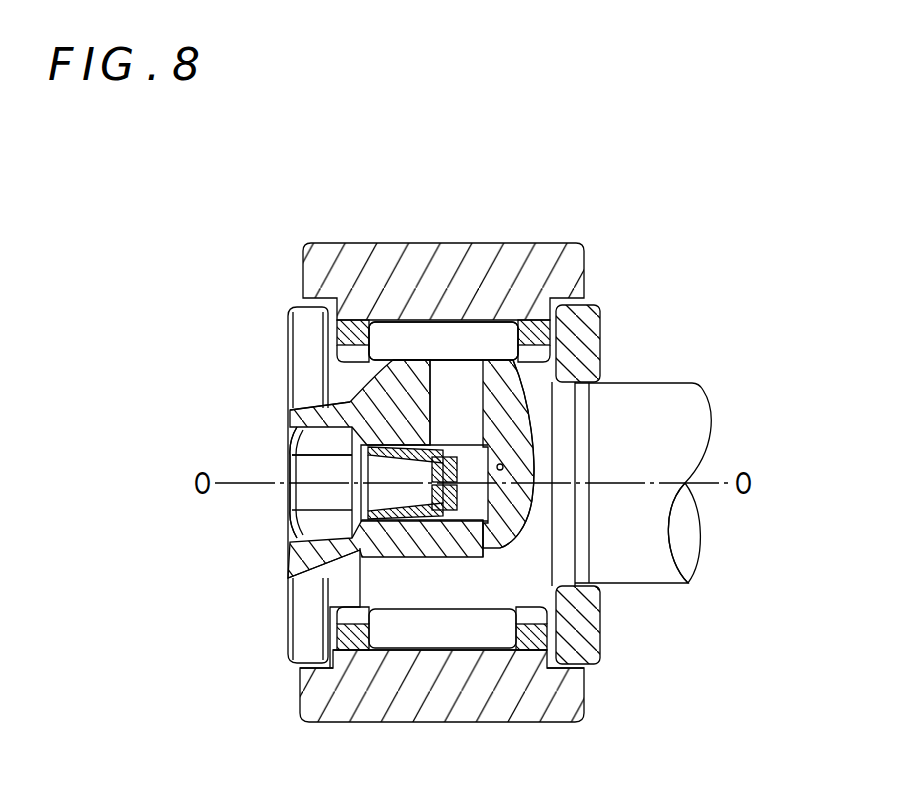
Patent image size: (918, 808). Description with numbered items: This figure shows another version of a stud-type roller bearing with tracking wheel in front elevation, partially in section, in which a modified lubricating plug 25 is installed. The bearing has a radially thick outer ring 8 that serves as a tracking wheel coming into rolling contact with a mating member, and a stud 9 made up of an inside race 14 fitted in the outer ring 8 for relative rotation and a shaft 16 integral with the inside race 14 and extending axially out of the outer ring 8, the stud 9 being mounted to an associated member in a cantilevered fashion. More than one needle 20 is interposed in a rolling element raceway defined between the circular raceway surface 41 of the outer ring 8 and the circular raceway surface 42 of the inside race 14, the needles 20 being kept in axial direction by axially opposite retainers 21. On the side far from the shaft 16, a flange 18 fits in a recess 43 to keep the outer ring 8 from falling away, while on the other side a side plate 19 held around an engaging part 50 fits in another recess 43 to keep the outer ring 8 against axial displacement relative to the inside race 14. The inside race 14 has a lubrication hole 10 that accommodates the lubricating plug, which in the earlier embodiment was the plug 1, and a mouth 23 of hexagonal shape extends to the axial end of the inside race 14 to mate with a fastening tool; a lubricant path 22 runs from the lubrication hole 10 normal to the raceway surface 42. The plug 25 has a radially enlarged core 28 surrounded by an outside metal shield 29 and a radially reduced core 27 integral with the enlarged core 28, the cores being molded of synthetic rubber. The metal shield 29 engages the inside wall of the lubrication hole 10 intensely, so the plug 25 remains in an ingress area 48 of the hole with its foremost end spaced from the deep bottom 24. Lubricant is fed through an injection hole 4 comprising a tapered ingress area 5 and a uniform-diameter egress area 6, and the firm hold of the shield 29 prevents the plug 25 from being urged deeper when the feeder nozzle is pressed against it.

The lubricating plug 1 is at (350, 403).
The injection hole 4 is at (300, 472).
The ingress area 5 is at (333, 474).
The egress area 6 is at (480, 493).
The outer ring 8 is at (517, 263).
The stud 9 is at (675, 403).
The lubrication hole 10 is at (481, 483).
The inside race 14 is at (518, 580).
The shaft 16 is at (653, 543).
The flange 18 is at (303, 338).
The side plate 19 is at (587, 323).
The needle 20 is at (408, 330).
The retainers 21 is at (352, 320).
The lubricant path 22 is at (456, 380).
The mouth 23 is at (313, 500).
The deep bottom 24 is at (500, 470).
The lubricating plug 25 is at (443, 450).
The radially reduced core 27 is at (453, 487).
The radially enlarged core 28 is at (400, 522).
The metal shield 29 is at (427, 513).
The circular raceway surface 41 is at (400, 650).
The circular raceway surface 42 is at (423, 322).
The recess 43 is at (300, 662).
The ingress area 48 is at (352, 508).
The engaging part 50 is at (585, 442).